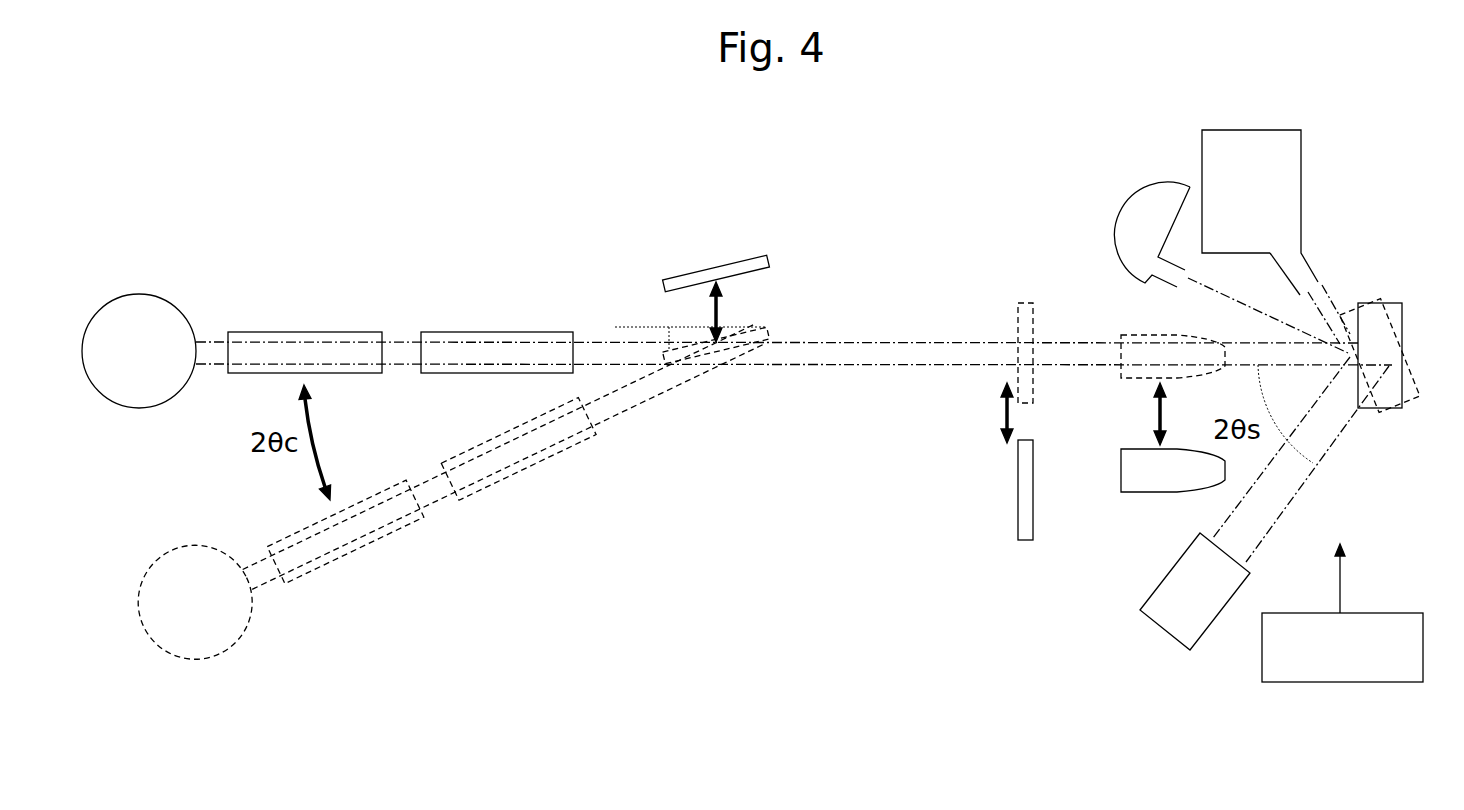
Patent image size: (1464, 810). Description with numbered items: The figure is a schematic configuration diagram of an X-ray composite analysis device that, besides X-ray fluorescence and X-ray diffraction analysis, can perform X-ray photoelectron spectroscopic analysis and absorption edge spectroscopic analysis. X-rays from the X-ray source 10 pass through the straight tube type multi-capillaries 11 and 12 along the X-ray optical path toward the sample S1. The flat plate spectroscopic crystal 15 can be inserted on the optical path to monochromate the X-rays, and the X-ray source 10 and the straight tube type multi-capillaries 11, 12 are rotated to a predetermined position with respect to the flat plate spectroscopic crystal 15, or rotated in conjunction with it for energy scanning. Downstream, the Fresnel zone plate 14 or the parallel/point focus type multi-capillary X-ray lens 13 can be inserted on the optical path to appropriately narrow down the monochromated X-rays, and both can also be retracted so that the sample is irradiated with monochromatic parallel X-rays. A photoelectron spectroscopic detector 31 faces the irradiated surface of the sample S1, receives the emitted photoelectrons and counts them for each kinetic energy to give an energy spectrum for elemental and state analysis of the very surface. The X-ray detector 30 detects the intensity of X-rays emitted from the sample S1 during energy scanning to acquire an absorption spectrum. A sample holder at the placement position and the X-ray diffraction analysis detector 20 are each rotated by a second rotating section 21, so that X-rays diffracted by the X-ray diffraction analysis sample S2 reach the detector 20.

The X-ray source 10 is at (116, 303).
The straight tube type multi-capillary 11 is at (285, 330).
The straight tube type multi-capillary 12 is at (487, 330).
The parallel/point focus type multi-capillary X-ray lens 13 is at (1120, 460).
The Fresnel zone plate 14 is at (1016, 490).
The flat plate spectroscopic crystal 15 is at (760, 275).
The X-ray diffraction analysis detector 20 is at (1203, 640).
The second rotating section 21 is at (1357, 683).
The X-ray detector 30 is at (1231, 128).
The photoelectron spectroscopic detector 31 is at (1128, 205).
The sample S1 is at (1343, 347).
The X-ray diffraction analysis sample S2 is at (1405, 405).